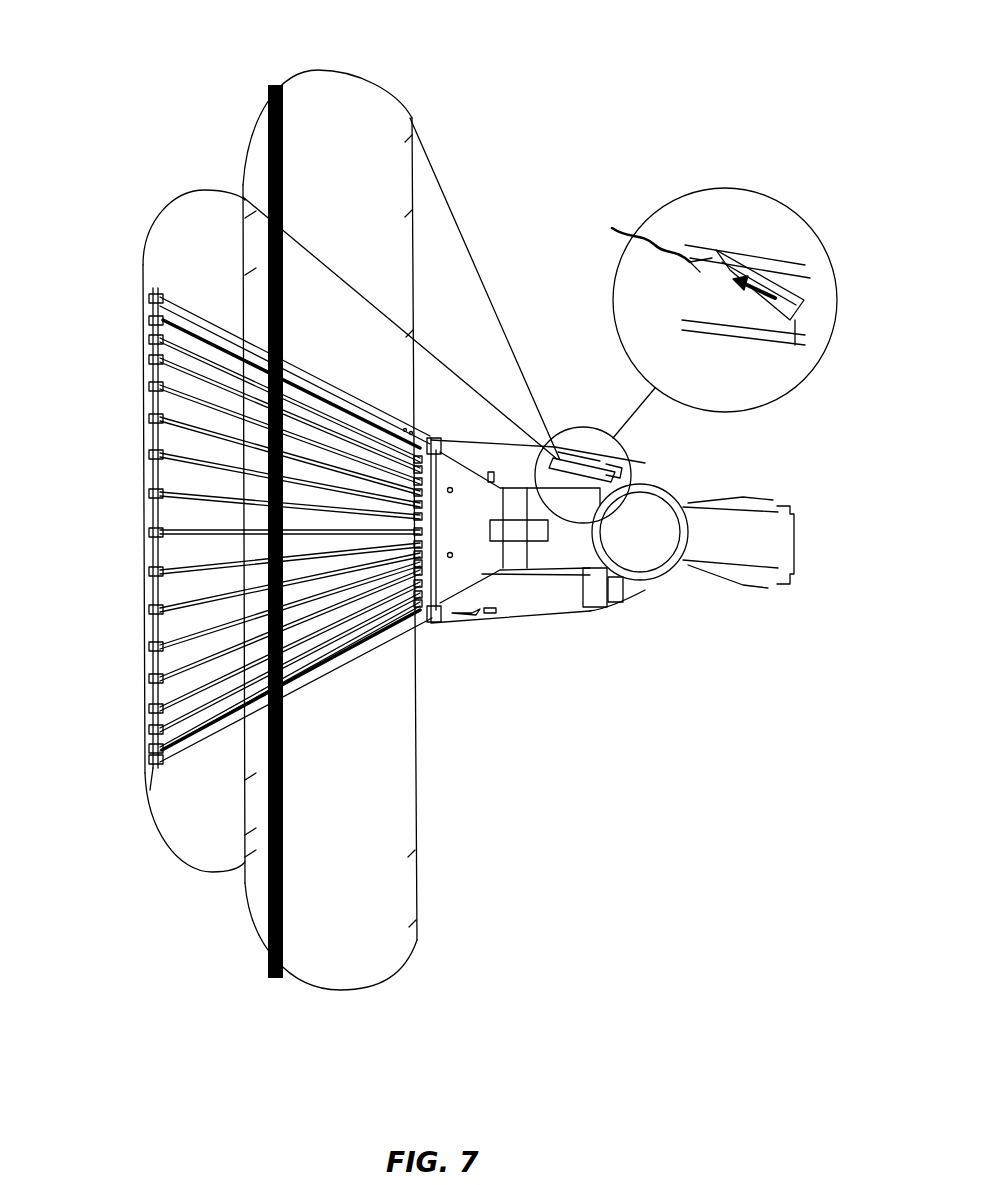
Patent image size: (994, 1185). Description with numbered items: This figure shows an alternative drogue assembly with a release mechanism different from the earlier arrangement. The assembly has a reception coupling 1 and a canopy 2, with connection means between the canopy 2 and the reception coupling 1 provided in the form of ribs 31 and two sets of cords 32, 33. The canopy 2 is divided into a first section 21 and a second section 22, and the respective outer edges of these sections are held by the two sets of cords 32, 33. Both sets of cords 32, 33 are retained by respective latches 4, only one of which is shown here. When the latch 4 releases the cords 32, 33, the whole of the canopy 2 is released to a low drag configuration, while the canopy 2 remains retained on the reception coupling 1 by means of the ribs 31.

The reception coupling 1 is at (540, 592).
The canopy 2 is at (249, 495).
The first section of the canopy 21 is at (180, 242).
The second section of the canopy 22 is at (320, 88).
The ribs 31 is at (193, 530).
The cords 32 is at (315, 248).
The cords 33 is at (442, 183).
The latch 4 is at (620, 470).